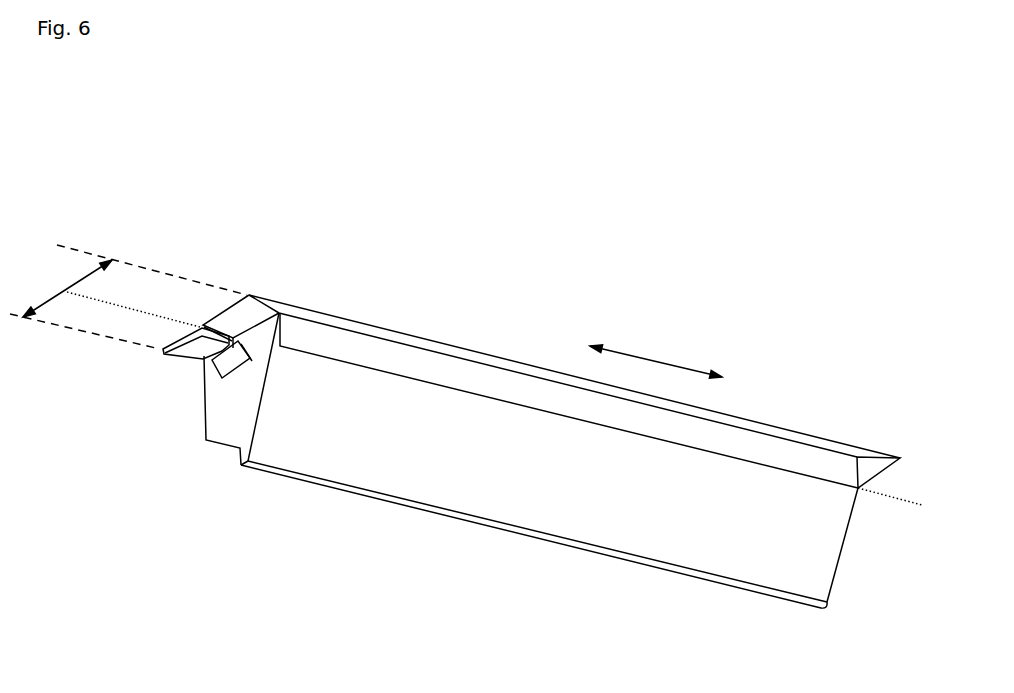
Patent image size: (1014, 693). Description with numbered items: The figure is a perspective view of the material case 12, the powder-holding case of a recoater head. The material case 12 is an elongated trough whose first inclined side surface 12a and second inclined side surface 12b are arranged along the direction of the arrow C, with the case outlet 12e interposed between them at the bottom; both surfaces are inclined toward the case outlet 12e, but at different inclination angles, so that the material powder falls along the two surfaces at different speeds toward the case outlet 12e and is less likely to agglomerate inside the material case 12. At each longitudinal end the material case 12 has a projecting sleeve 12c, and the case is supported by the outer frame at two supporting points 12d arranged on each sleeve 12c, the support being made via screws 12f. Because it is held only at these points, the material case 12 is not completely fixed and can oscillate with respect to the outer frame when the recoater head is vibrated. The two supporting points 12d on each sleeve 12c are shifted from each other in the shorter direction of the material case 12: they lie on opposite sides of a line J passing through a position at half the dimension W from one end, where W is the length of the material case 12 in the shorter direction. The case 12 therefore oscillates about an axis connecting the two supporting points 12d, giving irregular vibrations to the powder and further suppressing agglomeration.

The material case 12 is at (491, 284).
The first inclined side surface 12a is at (222, 446).
The second inclined side surface 12b is at (823, 562).
The sleeves 12c is at (250, 295).
The supporting points 12d is at (224, 314).
The case outlet 12e is at (306, 480).
The screws 12f is at (200, 327).
The length of the material case in the shorter direction W is at (128, 297).
The line J is at (118, 303).
The arrow C is at (656, 356).